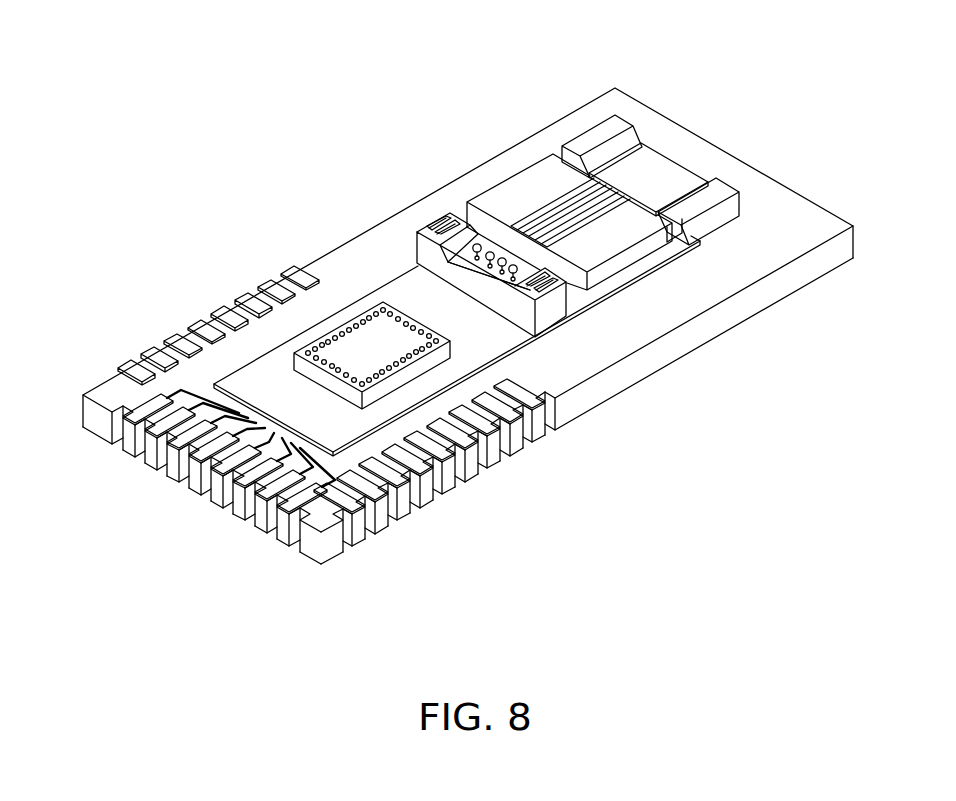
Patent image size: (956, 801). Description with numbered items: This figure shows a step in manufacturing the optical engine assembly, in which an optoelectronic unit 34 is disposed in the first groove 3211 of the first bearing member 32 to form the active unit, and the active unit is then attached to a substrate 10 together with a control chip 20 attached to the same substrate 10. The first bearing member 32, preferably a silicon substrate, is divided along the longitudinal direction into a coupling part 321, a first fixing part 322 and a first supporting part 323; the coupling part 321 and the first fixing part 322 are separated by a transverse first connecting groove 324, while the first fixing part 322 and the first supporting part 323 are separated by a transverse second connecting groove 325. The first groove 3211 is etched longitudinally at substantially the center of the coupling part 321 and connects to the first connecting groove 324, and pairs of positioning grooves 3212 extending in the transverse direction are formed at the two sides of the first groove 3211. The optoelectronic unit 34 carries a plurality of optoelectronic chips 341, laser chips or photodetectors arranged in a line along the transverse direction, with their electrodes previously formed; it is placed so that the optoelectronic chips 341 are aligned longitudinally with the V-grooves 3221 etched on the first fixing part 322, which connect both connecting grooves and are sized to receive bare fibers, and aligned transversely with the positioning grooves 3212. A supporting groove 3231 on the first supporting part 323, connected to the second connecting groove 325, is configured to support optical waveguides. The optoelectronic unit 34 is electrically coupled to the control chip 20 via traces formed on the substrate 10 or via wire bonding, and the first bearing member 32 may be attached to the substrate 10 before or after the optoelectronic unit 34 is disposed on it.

The substrate 10 is at (393, 512).
The control chip 20 is at (350, 340).
The first bearing member 32 is at (552, 244).
The coupling part 321 is at (407, 180).
The first groove 3211 is at (467, 230).
The positioning grooves 3212 is at (417, 228).
The first fixing part 322 is at (619, 238).
The V-grooves 3221 is at (596, 230).
The first supporting part 323 is at (683, 203).
The supporting groove 3231 is at (670, 168).
The first connecting groove 324 is at (579, 304).
The second connecting groove 325 is at (681, 240).
The optoelectronic unit 34 is at (511, 292).
The optoelectronic chips 341 is at (448, 270).